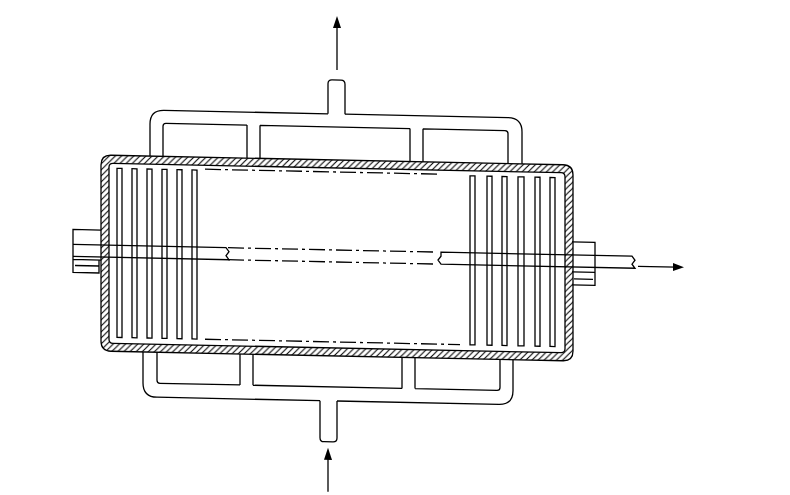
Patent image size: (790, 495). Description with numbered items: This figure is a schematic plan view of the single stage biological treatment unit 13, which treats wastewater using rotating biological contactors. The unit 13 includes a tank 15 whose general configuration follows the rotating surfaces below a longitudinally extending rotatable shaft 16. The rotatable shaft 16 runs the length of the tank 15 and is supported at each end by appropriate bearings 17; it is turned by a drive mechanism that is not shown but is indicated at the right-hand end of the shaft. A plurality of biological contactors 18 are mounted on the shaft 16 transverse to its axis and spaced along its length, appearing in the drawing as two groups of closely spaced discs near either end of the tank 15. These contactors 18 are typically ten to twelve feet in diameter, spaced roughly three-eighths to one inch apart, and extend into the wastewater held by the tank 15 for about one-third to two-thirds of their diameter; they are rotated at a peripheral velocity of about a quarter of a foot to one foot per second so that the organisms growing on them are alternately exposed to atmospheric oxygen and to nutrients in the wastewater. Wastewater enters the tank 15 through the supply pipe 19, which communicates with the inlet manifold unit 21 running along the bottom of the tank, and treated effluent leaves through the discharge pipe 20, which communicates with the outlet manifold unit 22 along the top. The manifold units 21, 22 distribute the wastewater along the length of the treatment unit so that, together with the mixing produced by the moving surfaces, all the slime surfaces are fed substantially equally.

The single stage biological treatment unit 13 is at (92, 132).
The tank 15 is at (118, 356).
The rotatable shaft 16 is at (216, 249).
The bearings 17 is at (74, 238).
The biological contactors 18 is at (197, 206).
The supply pipe 19 is at (338, 431).
The discharge pipe 20 is at (346, 96).
The inlet manifold unit 21 is at (268, 402).
The outlet manifold unit 22 is at (250, 112).